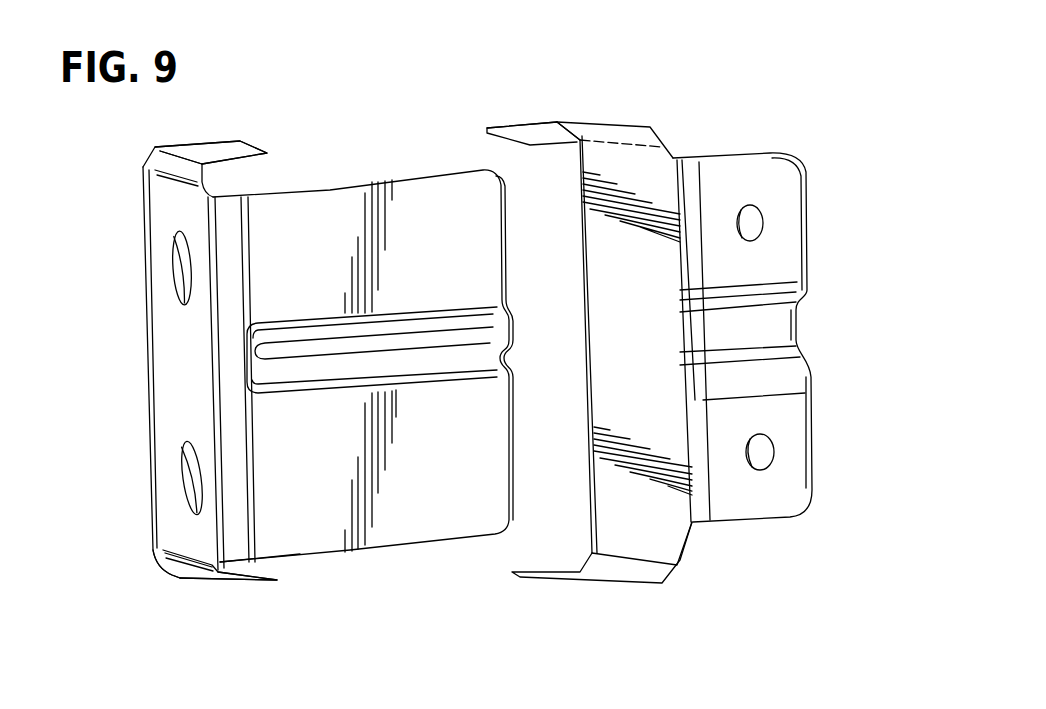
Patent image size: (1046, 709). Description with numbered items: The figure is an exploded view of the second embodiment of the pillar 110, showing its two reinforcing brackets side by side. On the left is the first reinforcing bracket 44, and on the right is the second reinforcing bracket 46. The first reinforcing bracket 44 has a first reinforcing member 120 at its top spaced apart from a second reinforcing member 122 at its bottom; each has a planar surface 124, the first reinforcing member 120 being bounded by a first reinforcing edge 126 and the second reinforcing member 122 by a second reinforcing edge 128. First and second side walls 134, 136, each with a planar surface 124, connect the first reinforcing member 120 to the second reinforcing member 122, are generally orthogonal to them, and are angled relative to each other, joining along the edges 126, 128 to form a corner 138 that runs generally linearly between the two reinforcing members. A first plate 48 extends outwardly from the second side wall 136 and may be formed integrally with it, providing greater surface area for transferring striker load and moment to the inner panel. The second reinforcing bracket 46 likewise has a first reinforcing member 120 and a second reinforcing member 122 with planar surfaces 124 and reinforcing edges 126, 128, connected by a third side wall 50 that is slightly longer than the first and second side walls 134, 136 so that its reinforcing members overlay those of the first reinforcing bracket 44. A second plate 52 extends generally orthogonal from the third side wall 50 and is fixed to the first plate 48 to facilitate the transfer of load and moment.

The first reinforcing bracket 44 is at (300, 321).
The second reinforcing bracket 46 is at (684, 289).
The first plate 48 is at (460, 248).
The third side wall 50 is at (647, 302).
The second plate 52 is at (790, 263).
The pillar 110 is at (442, 346).
The first reinforcing member 120 is at (213, 140).
The second reinforcing member 122 is at (232, 583).
The planar surface 124 is at (518, 121).
The first reinforcing edge 126 is at (270, 147).
The second reinforcing edge 128 is at (280, 580).
The first side wall 134 is at (205, 380).
The second side wall 136 is at (310, 263).
The corner 138 is at (237, 177).